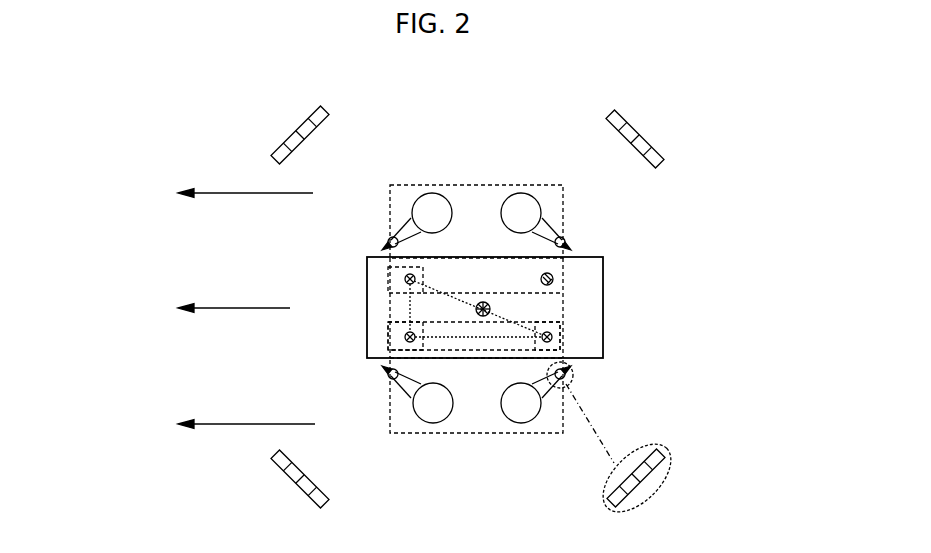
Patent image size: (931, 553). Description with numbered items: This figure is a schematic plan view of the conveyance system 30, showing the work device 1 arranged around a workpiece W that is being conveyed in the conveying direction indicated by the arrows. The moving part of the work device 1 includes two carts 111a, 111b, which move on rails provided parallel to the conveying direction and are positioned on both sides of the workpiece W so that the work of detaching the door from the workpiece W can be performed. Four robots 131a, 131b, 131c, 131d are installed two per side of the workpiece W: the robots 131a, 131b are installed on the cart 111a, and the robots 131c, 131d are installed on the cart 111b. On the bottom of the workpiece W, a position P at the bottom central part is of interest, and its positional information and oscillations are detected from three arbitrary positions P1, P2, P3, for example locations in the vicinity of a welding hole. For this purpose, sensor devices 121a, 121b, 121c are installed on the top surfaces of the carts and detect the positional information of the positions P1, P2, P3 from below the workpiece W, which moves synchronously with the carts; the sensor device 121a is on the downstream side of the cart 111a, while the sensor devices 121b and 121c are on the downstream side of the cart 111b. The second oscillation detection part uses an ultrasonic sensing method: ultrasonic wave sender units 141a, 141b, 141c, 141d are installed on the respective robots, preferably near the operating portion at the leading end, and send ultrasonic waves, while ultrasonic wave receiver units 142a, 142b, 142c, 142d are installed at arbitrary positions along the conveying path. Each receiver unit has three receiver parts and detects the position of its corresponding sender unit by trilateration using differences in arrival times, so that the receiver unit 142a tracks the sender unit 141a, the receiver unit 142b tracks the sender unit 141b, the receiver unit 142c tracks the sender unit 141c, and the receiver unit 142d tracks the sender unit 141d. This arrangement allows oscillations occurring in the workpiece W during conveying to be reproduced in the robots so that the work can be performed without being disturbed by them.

The conveyance system 30 is at (119, 95).
The work device 1 is at (414, 114).
The cart 111a is at (402, 185).
The cart 111b is at (408, 438).
The robot 131a is at (441, 194).
The robot 131b is at (529, 194).
The robot 131c is at (449, 423).
The robot 131d is at (536, 423).
The ultrasonic wave sender unit 141a is at (386, 240).
The ultrasonic wave sender unit 141b is at (564, 238).
The ultrasonic wave sender unit 141c is at (388, 379).
The ultrasonic wave sender unit 141d is at (571, 374).
The ultrasonic wave receiver unit 142a is at (282, 141).
The ultrasonic wave receiver unit 142b is at (644, 134).
The ultrasonic wave receiver unit 142c is at (288, 490).
The ultrasonic wave receiver unit 142d is at (656, 471).
The sensor device 121a is at (388, 279).
The sensor device 121b is at (388, 336).
The sensor device 121c is at (565, 330).
The position P1 is at (405, 280).
The position P2 is at (405, 340).
The position P3 is at (552, 337).
The position P is at (490, 309).
The workpiece W is at (603, 264).